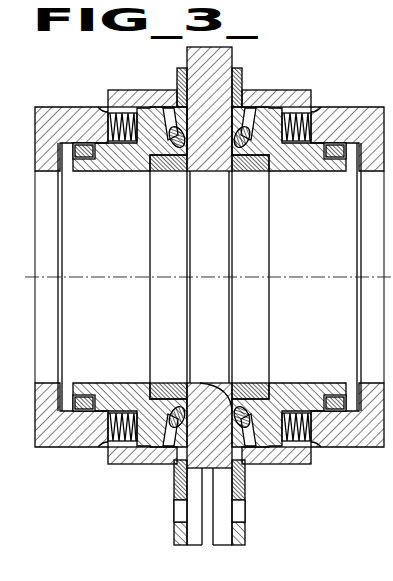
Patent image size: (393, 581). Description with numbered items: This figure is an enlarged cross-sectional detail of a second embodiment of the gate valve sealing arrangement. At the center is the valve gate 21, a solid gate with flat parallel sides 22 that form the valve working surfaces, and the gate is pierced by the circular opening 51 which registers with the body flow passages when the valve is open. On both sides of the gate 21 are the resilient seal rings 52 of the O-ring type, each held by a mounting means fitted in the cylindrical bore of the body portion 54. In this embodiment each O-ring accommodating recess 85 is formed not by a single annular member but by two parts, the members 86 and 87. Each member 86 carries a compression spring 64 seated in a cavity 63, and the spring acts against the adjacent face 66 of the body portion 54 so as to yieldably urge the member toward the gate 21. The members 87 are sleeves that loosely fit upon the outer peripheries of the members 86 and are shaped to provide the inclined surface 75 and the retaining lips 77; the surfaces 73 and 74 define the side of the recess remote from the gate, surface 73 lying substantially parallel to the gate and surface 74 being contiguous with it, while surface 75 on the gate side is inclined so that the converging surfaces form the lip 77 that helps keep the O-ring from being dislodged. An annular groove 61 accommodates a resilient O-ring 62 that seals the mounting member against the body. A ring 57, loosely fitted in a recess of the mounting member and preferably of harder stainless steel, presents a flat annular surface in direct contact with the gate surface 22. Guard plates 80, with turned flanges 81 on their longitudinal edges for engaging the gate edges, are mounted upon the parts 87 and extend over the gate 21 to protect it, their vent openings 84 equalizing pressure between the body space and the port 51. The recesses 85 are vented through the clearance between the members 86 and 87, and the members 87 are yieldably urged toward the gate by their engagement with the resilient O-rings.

The valve gate 21 is at (222, 56).
The flat parallel sides 22 is at (186, 53).
The opening 51 is at (222, 258).
The resilient seal rings 52 is at (204, 383).
The body portion 54 is at (58, 442).
The ring 57 is at (249, 172).
The annular groove 61 is at (72, 145).
The resilient O-ring 62 is at (88, 160).
The cavities 63 is at (307, 92).
The compression springs 64 is at (293, 112).
The face 66 is at (98, 108).
The surface 73 is at (160, 172).
The surface 74 is at (258, 465).
The inclined surface 75 is at (188, 113).
The retaining lip 77 is at (232, 128).
The guard plates 80 is at (173, 533).
The turned flanges 81 is at (220, 546).
The vent openings 84 is at (246, 513).
The recesses 85 is at (168, 110).
The members 86 is at (114, 172).
The members 87 is at (128, 90).